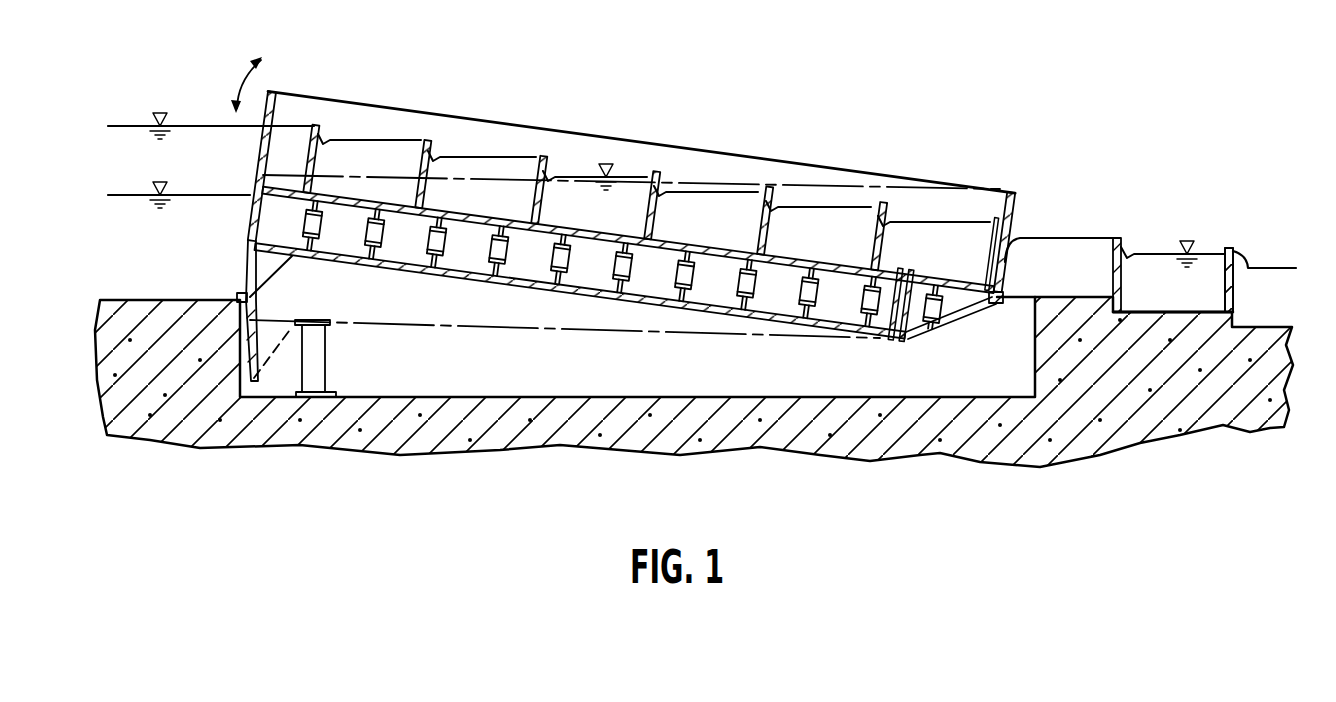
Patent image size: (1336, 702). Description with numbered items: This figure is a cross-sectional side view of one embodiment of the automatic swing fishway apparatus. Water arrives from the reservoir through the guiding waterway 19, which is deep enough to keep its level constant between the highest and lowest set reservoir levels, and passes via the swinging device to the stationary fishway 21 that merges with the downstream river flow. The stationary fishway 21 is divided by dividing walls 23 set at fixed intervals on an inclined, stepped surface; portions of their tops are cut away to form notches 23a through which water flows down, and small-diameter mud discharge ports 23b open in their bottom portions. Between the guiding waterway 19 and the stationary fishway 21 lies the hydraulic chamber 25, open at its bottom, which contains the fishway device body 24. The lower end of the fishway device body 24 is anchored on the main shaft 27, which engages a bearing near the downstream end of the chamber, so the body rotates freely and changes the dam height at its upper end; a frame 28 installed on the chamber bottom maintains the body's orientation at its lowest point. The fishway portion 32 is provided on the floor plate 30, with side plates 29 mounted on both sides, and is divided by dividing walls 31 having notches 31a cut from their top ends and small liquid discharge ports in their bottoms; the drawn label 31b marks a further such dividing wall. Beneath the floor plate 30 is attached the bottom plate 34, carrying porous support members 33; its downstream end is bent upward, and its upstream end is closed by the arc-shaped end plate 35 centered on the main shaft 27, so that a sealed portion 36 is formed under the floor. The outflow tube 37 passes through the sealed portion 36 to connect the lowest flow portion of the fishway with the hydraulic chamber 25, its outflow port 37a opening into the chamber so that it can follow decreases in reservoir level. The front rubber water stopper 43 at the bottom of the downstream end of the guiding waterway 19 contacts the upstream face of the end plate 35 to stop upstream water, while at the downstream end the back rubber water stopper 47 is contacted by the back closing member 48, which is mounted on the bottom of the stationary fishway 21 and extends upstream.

The guiding waterway 19 is at (132, 148).
The stationary fishway 21 is at (1152, 272).
The dividing walls 23 is at (1246, 250).
The notches 23a is at (1221, 267).
The mud discharge ports 23b is at (1233, 310).
The fishway device body 24 is at (637, 135).
The hydraulic chamber 25 is at (608, 406).
The main shaft 27 is at (1010, 288).
The frame 28 is at (333, 333).
The side plates 29 is at (520, 195).
The floor plate 30 is at (476, 215).
The dividing walls 31 is at (427, 170).
The notches 31a is at (779, 197).
The partition wall 31b is at (663, 233).
The fishway portion 32 is at (381, 155).
The porous support members 33 is at (566, 258).
The bottom plate 34 is at (375, 264).
The arc-shaped end plate 35 is at (252, 226).
The sealed portion 36 is at (532, 262).
The outflow tube 37 is at (902, 306).
The outflow port 37a is at (902, 340).
The front rubber water stopper 43 is at (240, 292).
The back rubber water stopper 47 is at (993, 306).
The back closing member 48 is at (1025, 303).